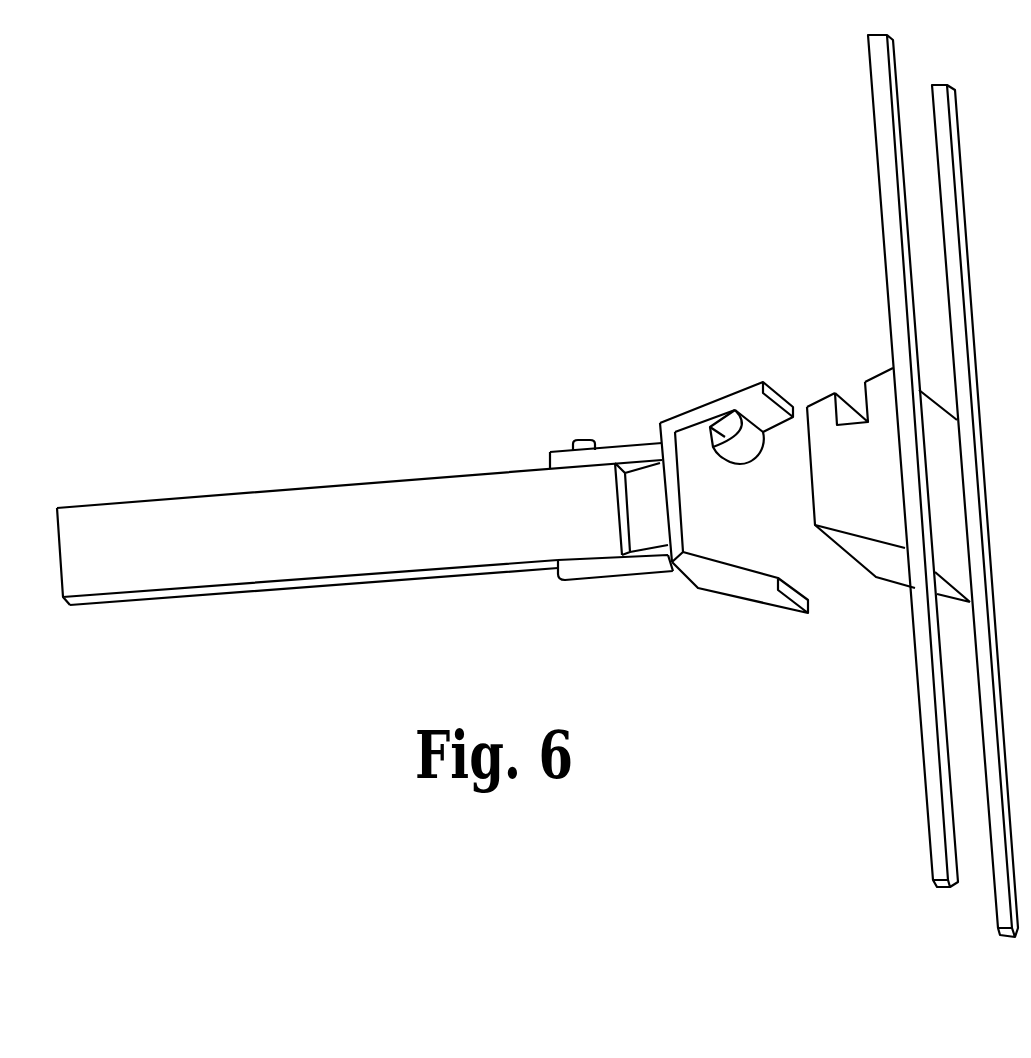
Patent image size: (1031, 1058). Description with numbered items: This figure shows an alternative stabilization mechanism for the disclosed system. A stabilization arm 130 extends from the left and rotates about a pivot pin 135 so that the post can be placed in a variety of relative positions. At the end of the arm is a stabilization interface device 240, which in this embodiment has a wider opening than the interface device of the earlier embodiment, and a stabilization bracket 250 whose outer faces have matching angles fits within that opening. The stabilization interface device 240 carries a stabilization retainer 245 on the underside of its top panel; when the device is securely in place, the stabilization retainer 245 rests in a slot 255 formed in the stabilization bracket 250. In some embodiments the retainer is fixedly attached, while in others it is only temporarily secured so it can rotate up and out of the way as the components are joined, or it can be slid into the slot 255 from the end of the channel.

The stabilization arm 130 is at (247, 492).
The pivot pin 135 is at (587, 438).
The stabilization interface device 240 is at (725, 396).
The stabilization retainer 245 is at (755, 465).
The stabilization bracket 250 is at (870, 578).
The slot 255 is at (855, 392).